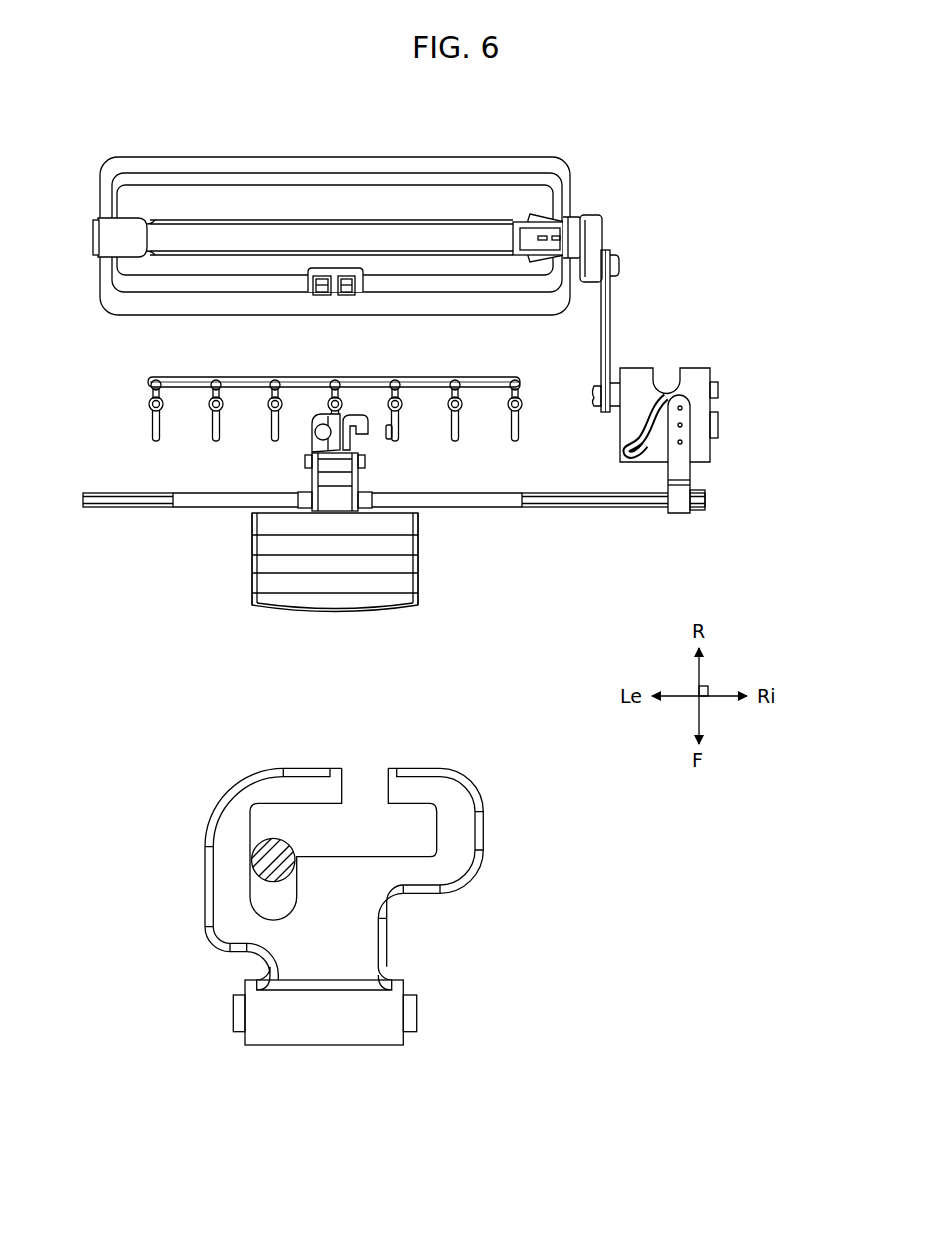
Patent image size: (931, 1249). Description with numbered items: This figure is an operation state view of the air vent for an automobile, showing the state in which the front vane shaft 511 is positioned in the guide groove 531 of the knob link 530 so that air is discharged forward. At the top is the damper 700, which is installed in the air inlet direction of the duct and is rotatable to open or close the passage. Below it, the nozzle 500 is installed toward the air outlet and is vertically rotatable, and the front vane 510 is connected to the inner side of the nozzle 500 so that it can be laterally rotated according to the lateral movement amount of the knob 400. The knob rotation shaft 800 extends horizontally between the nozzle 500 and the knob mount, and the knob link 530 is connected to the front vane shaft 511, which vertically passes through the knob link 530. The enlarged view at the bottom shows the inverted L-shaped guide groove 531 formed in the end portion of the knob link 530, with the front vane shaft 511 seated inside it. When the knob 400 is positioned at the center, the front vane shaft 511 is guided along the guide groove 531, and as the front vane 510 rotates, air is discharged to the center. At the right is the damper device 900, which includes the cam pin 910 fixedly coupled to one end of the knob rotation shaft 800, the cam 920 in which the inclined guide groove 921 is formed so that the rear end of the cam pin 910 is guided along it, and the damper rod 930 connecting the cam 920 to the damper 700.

The damper 700 is at (343, 165).
The nozzle 500 is at (292, 389).
The front vane 510 is at (157, 420).
The knob link 530 is at (318, 449).
The guide groove 531 is at (421, 830).
The front vane shaft 511 is at (297, 860).
The knob 400 is at (263, 582).
The knob rotation shaft 800 is at (482, 506).
The damper device 900 is at (724, 364).
The damper rod 930 is at (610, 316).
The cam 920 is at (700, 377).
The guide groove 921 is at (707, 407).
The cam pin 910 is at (738, 454).